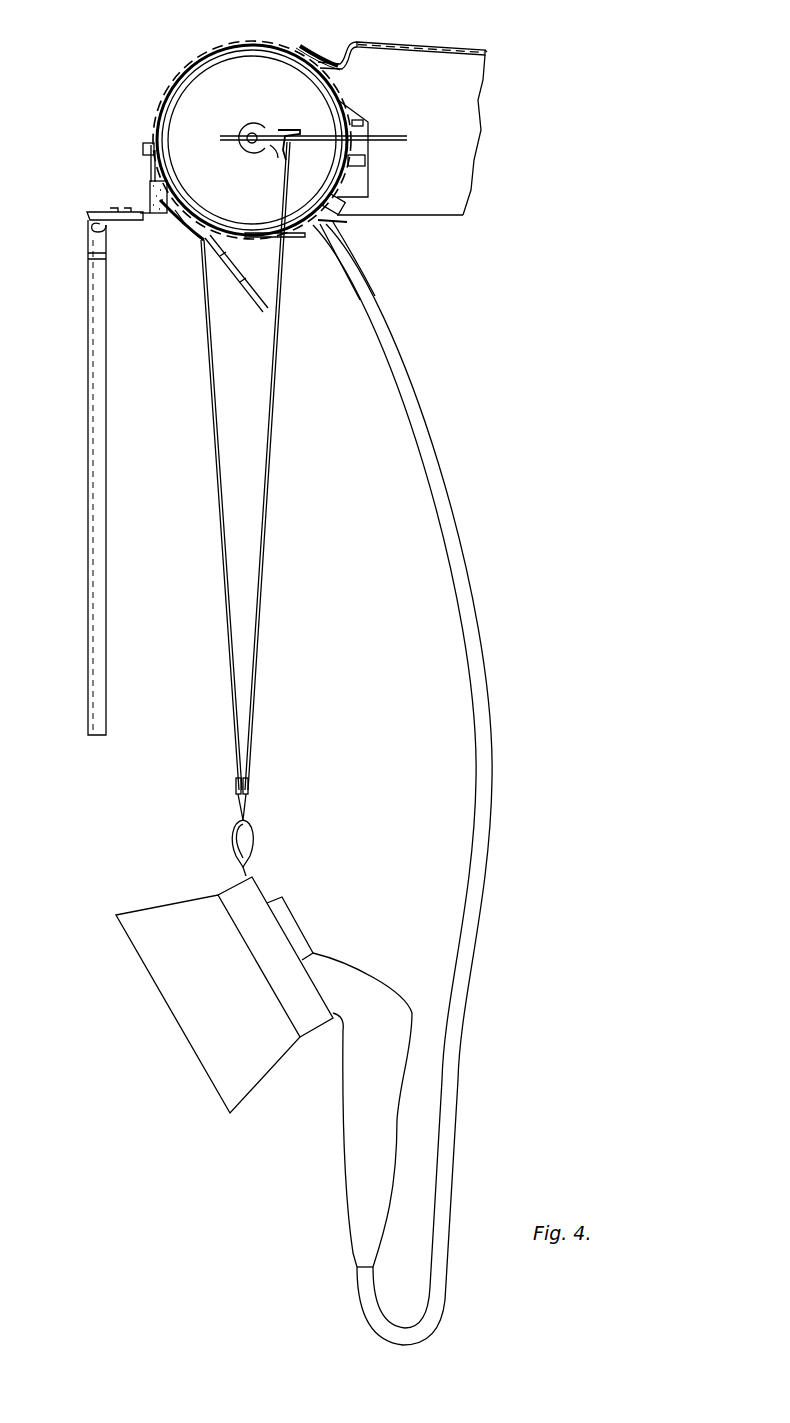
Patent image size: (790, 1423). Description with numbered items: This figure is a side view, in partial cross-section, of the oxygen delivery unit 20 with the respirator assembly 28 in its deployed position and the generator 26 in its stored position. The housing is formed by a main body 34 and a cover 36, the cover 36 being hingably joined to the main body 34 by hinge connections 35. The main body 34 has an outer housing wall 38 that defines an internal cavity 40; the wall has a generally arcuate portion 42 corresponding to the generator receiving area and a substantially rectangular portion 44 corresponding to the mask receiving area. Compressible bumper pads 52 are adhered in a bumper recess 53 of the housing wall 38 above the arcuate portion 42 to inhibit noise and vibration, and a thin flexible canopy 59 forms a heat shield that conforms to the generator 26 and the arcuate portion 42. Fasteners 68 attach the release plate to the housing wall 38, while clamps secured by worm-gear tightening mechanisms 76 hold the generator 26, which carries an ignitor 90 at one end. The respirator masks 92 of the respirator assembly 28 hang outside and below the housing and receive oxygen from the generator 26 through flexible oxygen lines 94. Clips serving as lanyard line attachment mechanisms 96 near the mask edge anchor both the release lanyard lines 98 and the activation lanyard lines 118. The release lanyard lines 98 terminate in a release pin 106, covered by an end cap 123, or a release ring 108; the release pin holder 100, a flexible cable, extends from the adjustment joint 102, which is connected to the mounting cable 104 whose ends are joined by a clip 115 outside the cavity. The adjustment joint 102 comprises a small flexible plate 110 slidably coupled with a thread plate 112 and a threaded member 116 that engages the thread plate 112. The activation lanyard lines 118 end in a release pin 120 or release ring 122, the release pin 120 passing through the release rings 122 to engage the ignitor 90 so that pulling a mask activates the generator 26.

The oxygen delivery unit 20 is at (548, 185).
The generator 26 is at (200, 92).
The respirator assembly 28 is at (516, 918).
The main body 34 is at (470, 78).
The hinge connections 35 is at (118, 242).
The cover 36 is at (103, 471).
The outer housing wall 38 is at (345, 46).
The internal cavity 40 is at (450, 121).
The arcuate portion 42 is at (202, 56).
The rectangular portion 44 is at (488, 52).
The bumper pads 52 is at (150, 193).
The bumper recess 53 is at (156, 173).
The canopy 59 is at (445, 208).
The fasteners 68 is at (148, 145).
The tightening mechanisms 76 is at (357, 150).
The ignitor 90 is at (258, 126).
The respirator masks 92 is at (186, 1012).
The flexible oxygen lines 94 is at (455, 515).
The lanyard line attachment mechanisms 96 is at (232, 830).
The release lanyard lines 98 is at (252, 313).
The release pin holder 100 is at (258, 240).
The adjustment joint 102 is at (366, 228).
The mounting cable 104 is at (330, 60).
The release pin 106 is at (196, 236).
The release ring 108 is at (210, 246).
The flexible plate 110 is at (330, 250).
The thread plate 112 is at (322, 232).
The clip 115 is at (325, 50).
The threaded member 116 is at (370, 176).
The activation lanyard lines 118 is at (268, 480).
The release pin 120 is at (232, 134).
The release ring 122 is at (272, 150).
The end cap 123 is at (178, 202).